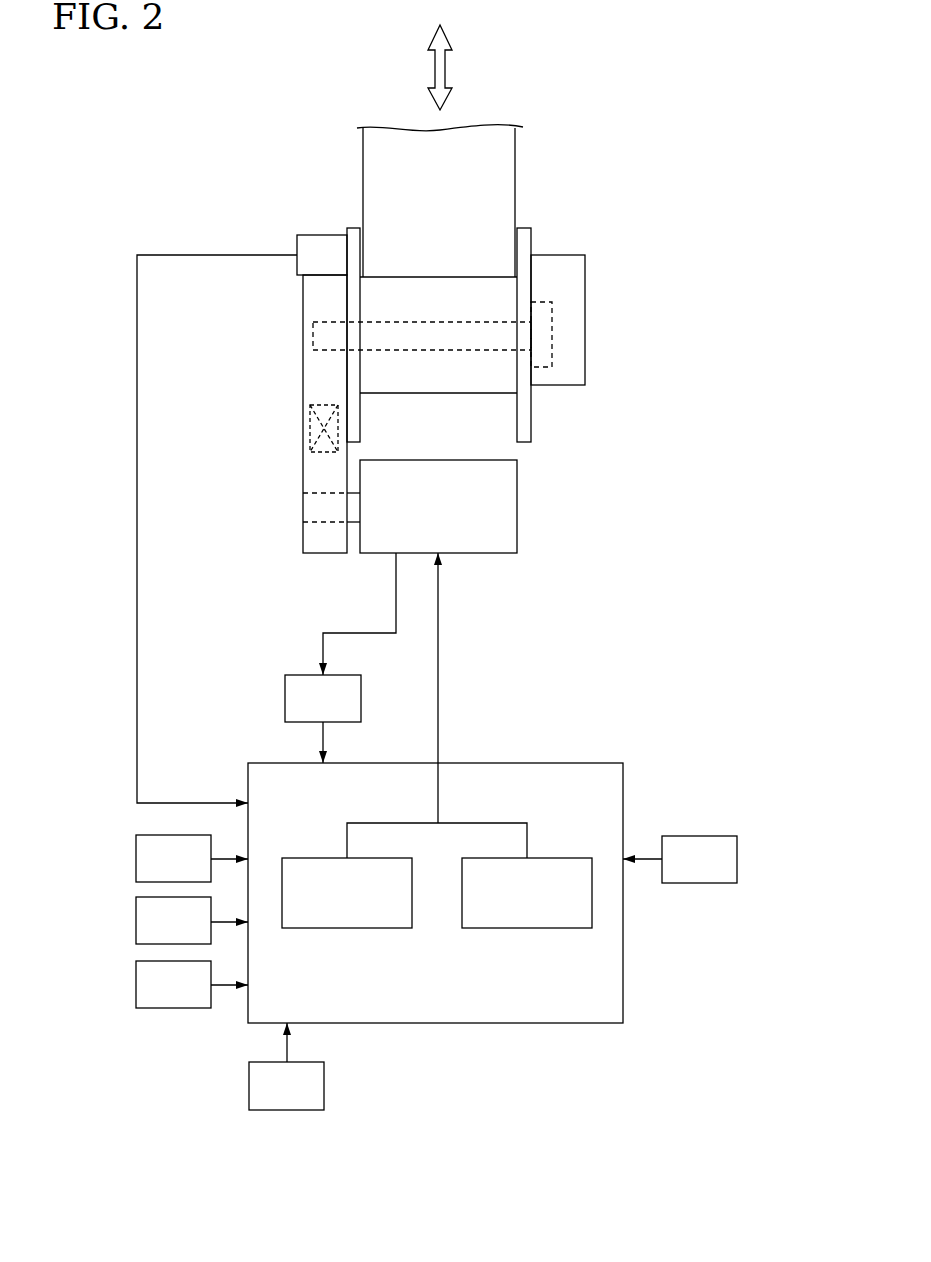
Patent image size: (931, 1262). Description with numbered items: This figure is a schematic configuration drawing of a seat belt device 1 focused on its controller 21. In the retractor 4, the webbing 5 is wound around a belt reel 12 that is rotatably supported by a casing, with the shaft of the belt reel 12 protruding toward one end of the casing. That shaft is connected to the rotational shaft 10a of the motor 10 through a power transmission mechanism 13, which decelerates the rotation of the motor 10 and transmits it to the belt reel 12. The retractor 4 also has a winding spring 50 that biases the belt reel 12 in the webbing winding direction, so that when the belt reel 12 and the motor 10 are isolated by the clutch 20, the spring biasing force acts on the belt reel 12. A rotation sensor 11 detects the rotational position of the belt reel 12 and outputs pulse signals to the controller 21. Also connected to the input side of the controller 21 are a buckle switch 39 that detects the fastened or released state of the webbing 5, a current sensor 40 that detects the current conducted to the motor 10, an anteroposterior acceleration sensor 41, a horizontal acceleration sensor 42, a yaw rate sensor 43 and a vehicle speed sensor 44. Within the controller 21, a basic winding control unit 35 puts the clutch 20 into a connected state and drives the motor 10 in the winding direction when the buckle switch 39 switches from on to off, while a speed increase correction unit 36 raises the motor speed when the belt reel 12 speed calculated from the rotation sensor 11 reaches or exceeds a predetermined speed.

The processing apparatus 1 is at (555, 172).
The retractor 4 is at (540, 246).
The webbing 5 is at (395, 140).
The motor 10 is at (500, 508).
The rotational shaft 10a is at (352, 508).
The rotation sensor 11 is at (320, 235).
The belt reel 12 is at (487, 350).
The power transmission mechanism 13 is at (303, 342).
The clutch 20 is at (310, 426).
The controller 21 is at (538, 763).
The basic winding control unit 35 is at (345, 930).
The speed increase correction unit 36 is at (525, 930).
The buckle switch 39 is at (737, 860).
The current sensor 40 is at (285, 700).
The anteroposterior acceleration sensor 41 is at (136, 859).
The horizontal acceleration sensor 42 is at (136, 922).
The yaw rate sensor 43 is at (136, 985).
The vehicle speed sensor 44 is at (249, 1086).
The winding spring 50 is at (552, 336).